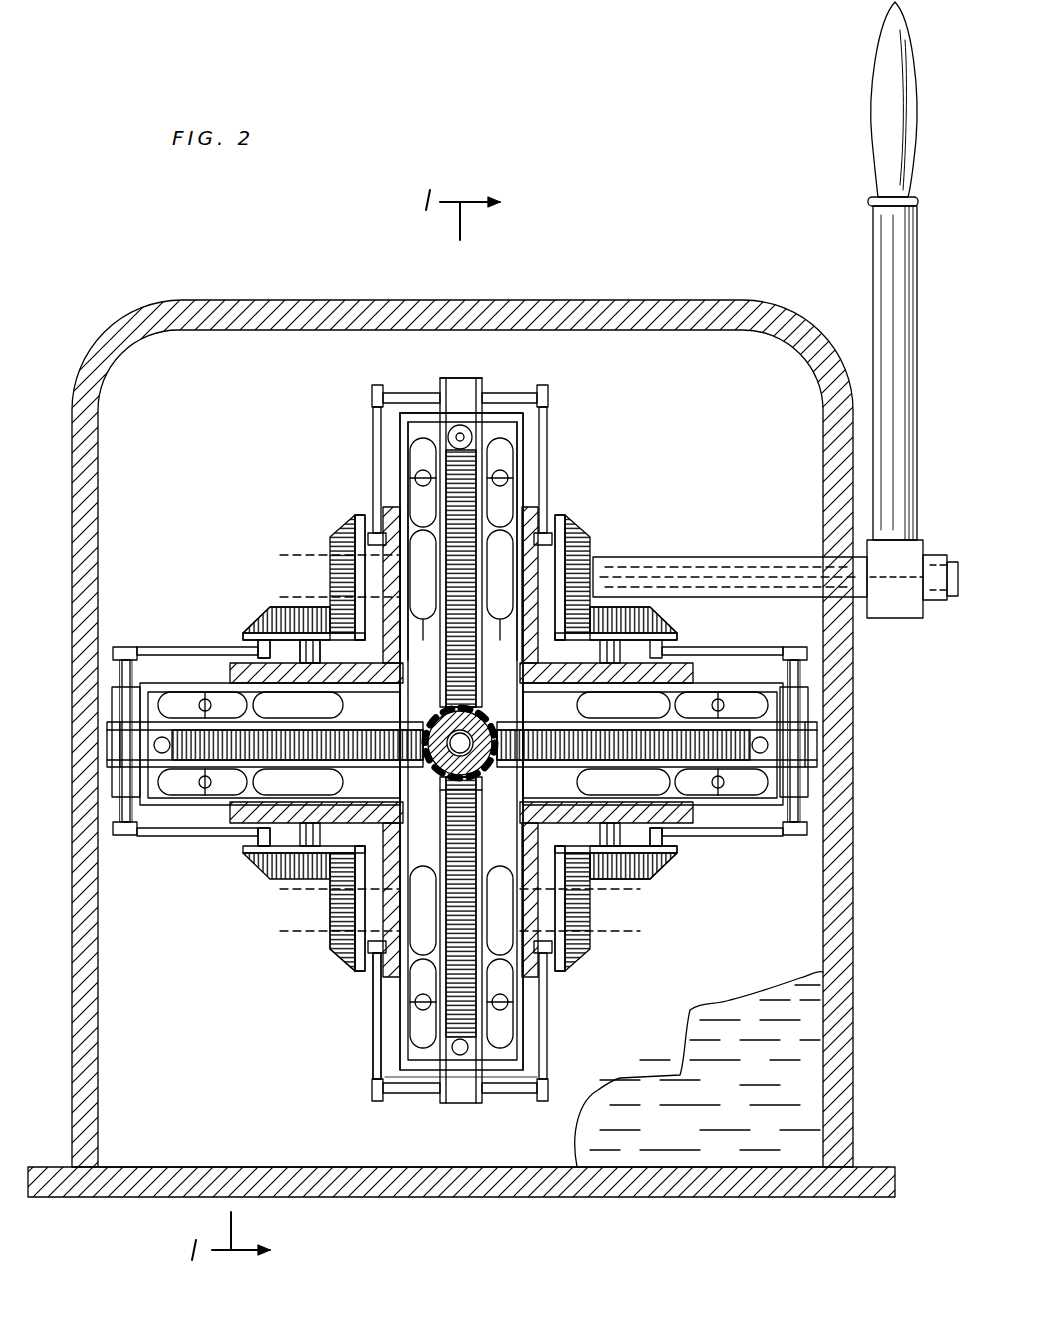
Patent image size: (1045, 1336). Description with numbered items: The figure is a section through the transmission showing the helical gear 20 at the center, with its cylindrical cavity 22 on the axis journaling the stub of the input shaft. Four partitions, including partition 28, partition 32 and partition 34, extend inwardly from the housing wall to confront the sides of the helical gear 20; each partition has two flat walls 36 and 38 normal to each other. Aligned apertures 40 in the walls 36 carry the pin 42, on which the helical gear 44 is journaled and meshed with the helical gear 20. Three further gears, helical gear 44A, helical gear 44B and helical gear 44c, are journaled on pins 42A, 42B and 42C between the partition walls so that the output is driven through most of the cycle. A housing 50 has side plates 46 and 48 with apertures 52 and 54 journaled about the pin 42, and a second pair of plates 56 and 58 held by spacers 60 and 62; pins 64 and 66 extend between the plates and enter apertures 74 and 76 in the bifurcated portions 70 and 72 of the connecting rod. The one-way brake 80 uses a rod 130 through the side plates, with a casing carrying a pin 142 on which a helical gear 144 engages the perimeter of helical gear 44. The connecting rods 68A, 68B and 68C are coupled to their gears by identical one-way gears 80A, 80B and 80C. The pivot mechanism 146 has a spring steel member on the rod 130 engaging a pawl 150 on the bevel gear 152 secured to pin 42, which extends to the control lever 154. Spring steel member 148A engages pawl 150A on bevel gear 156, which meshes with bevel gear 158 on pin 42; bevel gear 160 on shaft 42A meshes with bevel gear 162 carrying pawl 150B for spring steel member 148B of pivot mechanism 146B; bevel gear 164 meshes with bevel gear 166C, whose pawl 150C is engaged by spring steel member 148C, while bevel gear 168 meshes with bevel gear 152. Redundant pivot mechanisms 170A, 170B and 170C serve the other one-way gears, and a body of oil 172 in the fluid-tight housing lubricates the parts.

The helical gear 20 is at (446, 790).
The cylindrical cavity 22 is at (472, 760).
The partition 28 is at (362, 518).
The partition 32 is at (608, 878).
The partition 34 is at (328, 935).
The flat wall 36 is at (330, 560).
The flat wall 38 is at (258, 840).
The aperture 40 is at (340, 592).
The pin 42 is at (742, 560).
The pin 42A is at (292, 735).
The pin 42B is at (405, 940).
The pin 42C is at (665, 795).
The helical gear 44 is at (442, 698).
The helical gear 44A is at (395, 745).
The helical gear 44B is at (480, 815).
The helical gear 44c is at (500, 730).
The side plate 46 is at (440, 660).
The side plate 48 is at (520, 660).
The housing 50 is at (470, 370).
The aperture 52 is at (422, 640).
The aperture 54 is at (499, 640).
The side plate 56 is at (440, 470).
The side plate 58 is at (522, 416).
The spacer 60 is at (388, 686).
The spacer 62 is at (540, 686).
The pin 64 is at (415, 474).
The pin 66 is at (508, 478).
The connecting rod 68A is at (205, 700).
The connecting rod 68B is at (428, 1030).
The connecting rod 68C is at (780, 705).
The bifurcated portion 70 is at (402, 432).
The bifurcated portion 72 is at (518, 442).
The aperture 74 is at (410, 500).
The aperture 76 is at (505, 470).
The one-way brake 80 is at (436, 412).
The one-way gear 80A is at (165, 752).
The one-way gear 80B is at (461, 1110).
The one-way gear 80C is at (828, 745).
The rod 130 is at (527, 392).
The pin 142 is at (466, 432).
The helical gear 144 is at (458, 425).
The pivot mechanism 146 is at (372, 396).
The pivot mechanism 146B is at (368, 1085).
The spring steel member 148A is at (126, 650).
The spring steel member 148B is at (368, 1078).
The spring steel member 148C is at (697, 834).
The pawl 150 is at (565, 522).
The pawl 150A is at (262, 640).
The pawl 150B is at (345, 948).
The pawl 150C is at (660, 855).
The bevel gear 152 is at (590, 545).
The control lever 154 is at (882, 240).
The bevel gear 156 is at (248, 638).
The bevel gear 158 is at (328, 545).
The bevel gear 160 is at (298, 872).
The bevel gear 162 is at (355, 962).
The bevel gear 164 is at (566, 960).
The bevel gear 166C is at (680, 853).
The bevel gear 168 is at (665, 615).
The redundant pivot mechanism 170A is at (152, 842).
The redundant pivot mechanism 170B is at (560, 1048).
The redundant pivot mechanism 170C is at (722, 655).
The body of oil 172 is at (699, 1069).